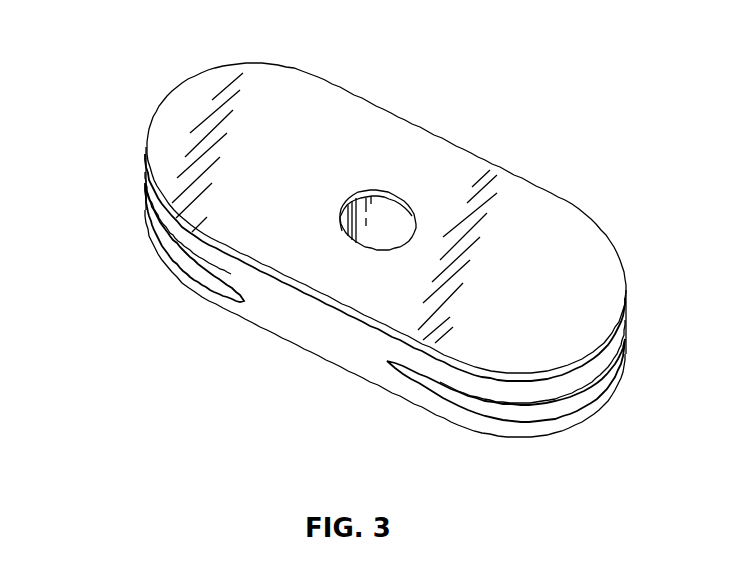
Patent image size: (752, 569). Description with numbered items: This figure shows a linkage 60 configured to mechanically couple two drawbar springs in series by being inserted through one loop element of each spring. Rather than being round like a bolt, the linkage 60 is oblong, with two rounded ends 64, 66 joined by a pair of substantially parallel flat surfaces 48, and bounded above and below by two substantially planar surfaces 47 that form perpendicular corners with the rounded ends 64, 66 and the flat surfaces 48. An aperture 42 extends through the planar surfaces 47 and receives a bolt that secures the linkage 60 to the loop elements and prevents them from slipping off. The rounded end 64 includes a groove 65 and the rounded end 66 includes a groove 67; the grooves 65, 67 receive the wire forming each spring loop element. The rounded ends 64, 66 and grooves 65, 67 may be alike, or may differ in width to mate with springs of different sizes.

The linkage 60 is at (362, 254).
The rounded end 64 is at (112, 207).
The rounded end 66 is at (648, 416).
The groove 65 is at (170, 253).
The groove 67 is at (553, 386).
The aperture 42 is at (379, 214).
The substantially planar surfaces 47 is at (552, 304).
The flat surfaces 48 is at (436, 113).